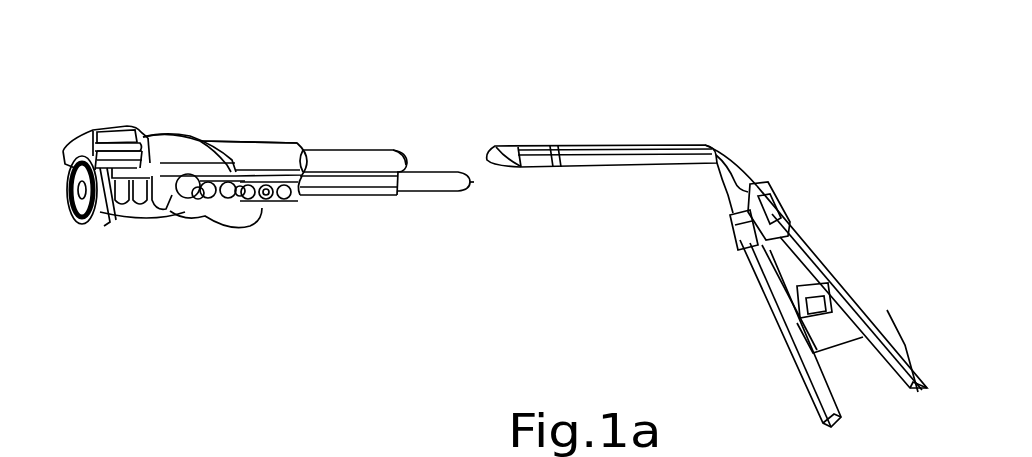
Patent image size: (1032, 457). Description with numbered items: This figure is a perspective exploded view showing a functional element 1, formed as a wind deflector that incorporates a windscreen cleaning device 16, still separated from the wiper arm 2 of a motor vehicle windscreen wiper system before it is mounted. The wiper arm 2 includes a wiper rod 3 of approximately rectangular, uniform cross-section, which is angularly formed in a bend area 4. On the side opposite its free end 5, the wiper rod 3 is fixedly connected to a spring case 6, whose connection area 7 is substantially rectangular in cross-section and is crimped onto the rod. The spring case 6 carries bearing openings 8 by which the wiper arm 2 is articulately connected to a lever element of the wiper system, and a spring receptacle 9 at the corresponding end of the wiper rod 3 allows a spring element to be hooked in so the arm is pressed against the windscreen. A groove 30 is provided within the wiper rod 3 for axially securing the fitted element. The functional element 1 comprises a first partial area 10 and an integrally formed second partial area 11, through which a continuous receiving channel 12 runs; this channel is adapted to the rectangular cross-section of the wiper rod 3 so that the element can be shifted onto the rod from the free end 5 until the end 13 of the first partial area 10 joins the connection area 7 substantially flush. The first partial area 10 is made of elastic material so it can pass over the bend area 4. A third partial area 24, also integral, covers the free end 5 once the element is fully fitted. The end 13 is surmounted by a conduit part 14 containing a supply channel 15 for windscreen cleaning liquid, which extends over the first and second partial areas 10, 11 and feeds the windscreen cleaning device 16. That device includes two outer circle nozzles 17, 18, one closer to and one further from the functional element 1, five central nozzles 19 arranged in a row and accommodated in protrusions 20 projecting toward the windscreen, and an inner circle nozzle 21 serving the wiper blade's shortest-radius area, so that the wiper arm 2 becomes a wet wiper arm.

The functional element 1 is at (316, 75).
The wiper arm 2 is at (807, 101).
The wiper rod 3 is at (612, 147).
The bend area 4 is at (712, 150).
The free end 5 is at (526, 121).
The spring case 6 is at (822, 272).
The connection area 7 is at (770, 202).
The bearing openings 8 is at (913, 342).
The spring receptacle 9 is at (810, 324).
The first partial area 10 is at (377, 106).
The second partial area 11 is at (252, 109).
The receiving channel 12 is at (130, 207).
The end 13 is at (407, 160).
The conduit part 14 is at (424, 184).
The supply channel 15 is at (481, 188).
The windscreen cleaning device 16 is at (251, 242).
The outer circle nozzle 17 is at (74, 231).
The outer circle nozzle 18 is at (70, 200).
The central nozzles 19 is at (132, 219).
The protrusions 20 is at (199, 208).
The inner circle nozzle 21 is at (270, 201).
The third partial area 24 is at (135, 109).
The groove 30 is at (561, 188).